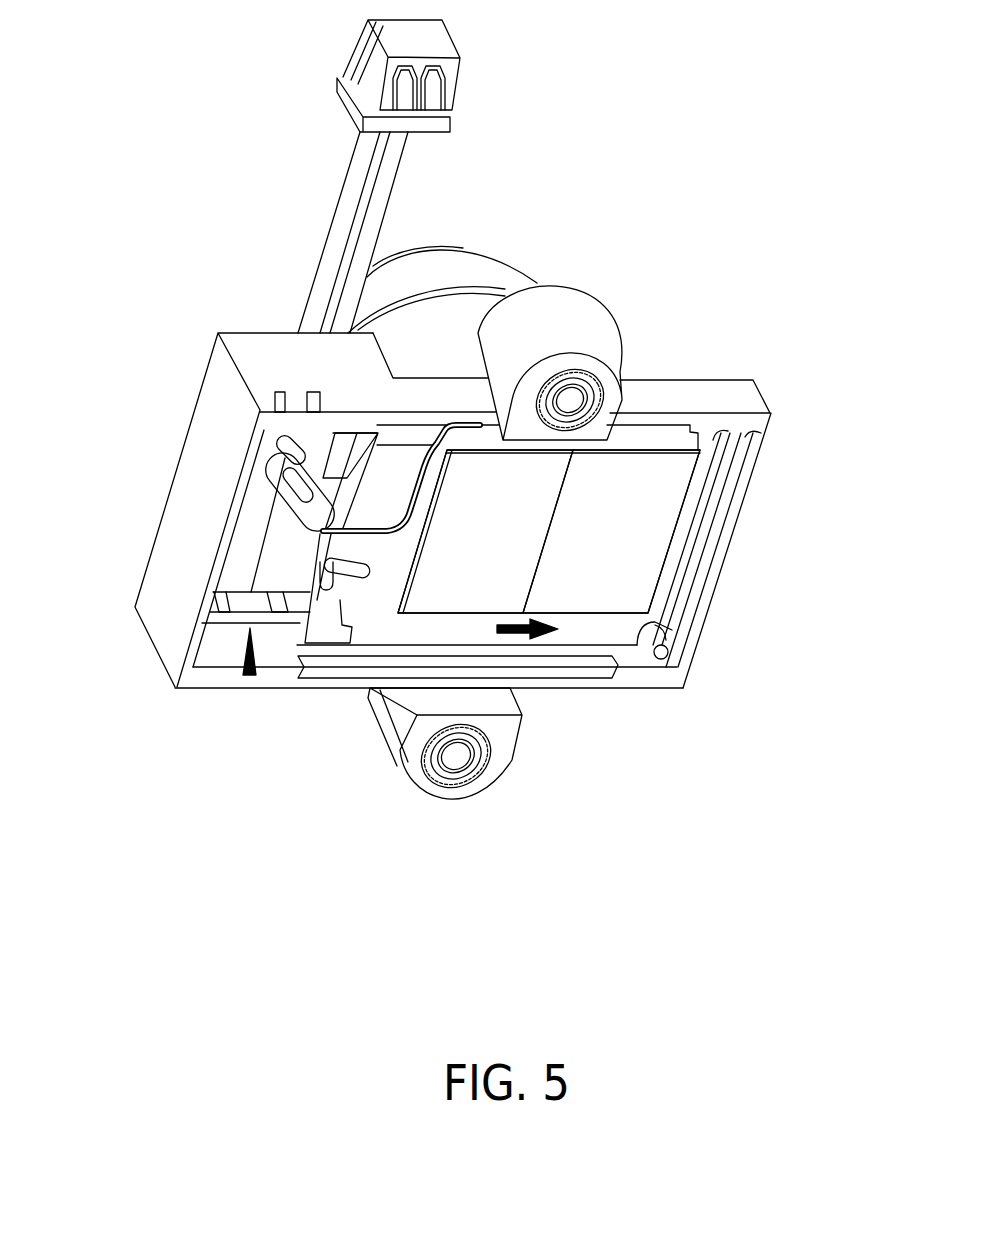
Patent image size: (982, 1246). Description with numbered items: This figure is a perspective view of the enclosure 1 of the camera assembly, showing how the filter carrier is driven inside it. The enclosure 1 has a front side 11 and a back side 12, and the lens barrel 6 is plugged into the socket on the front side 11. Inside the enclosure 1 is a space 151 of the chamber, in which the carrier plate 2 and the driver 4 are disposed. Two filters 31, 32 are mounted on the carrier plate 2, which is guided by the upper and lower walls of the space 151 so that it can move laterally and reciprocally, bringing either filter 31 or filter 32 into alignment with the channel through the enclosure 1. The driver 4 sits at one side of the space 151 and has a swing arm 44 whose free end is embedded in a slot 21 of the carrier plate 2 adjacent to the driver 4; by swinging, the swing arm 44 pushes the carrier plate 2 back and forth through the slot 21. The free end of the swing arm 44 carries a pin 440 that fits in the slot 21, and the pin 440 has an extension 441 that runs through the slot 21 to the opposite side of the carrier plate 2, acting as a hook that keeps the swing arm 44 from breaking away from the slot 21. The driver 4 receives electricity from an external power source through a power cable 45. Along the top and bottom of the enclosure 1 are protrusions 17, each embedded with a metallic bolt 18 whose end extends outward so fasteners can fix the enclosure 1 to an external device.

The enclosure 1 is at (430, 518).
The front side 11 is at (182, 470).
The back side 12 is at (193, 677).
The space 151 is at (400, 475).
The protrusion 17 is at (619, 320).
The metallic bolt 18 is at (583, 397).
The carrier plate 2 is at (605, 659).
The slot 21 is at (364, 652).
The filter 31 is at (460, 570).
The filter 32 is at (608, 572).
The driver 4 is at (241, 677).
The swing arm 44 is at (201, 587).
The pin 440 is at (307, 512).
The extension 441 is at (358, 568).
The power cable 45 is at (347, 210).
The lens barrel 6 is at (492, 272).